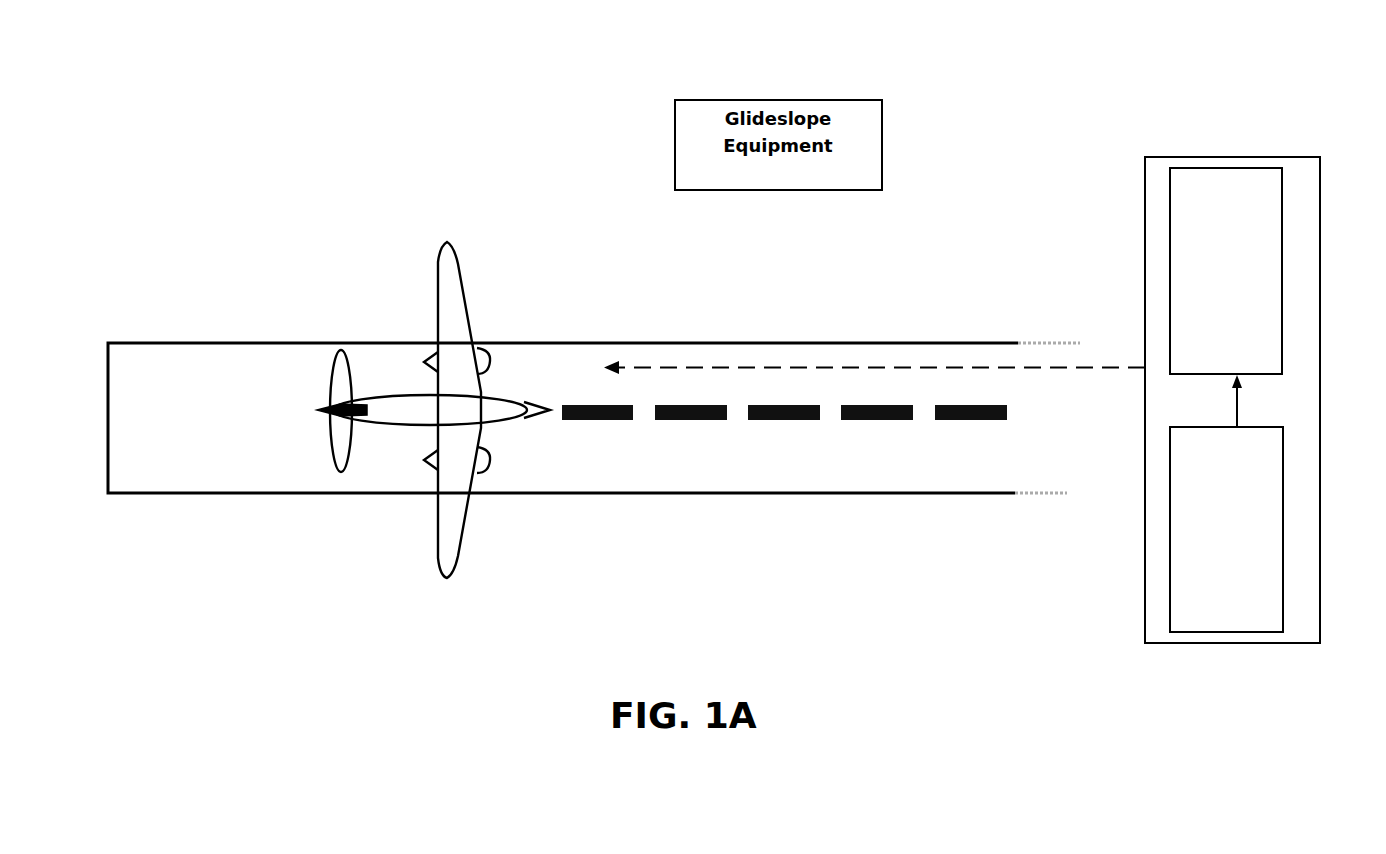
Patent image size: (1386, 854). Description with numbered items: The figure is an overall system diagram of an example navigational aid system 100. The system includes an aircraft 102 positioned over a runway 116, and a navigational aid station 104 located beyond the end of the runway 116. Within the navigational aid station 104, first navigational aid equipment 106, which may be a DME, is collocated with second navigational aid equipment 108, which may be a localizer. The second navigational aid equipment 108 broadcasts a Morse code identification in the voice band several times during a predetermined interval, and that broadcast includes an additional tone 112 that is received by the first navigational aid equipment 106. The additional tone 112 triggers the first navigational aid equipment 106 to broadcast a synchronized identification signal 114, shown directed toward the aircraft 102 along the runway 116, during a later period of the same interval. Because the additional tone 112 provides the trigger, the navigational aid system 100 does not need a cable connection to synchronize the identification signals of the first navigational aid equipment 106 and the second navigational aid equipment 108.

The navigational aid system 100 is at (179, 71).
The aircraft 102 is at (451, 240).
The navigational aid station 104 is at (1256, 400).
The first navigational aid equipment 106 is at (1172, 255).
The second navigational aid equipment 108 is at (1172, 512).
The additional tone 112 is at (1238, 392).
The identification signal 114 is at (685, 361).
The runway 116 is at (260, 343).